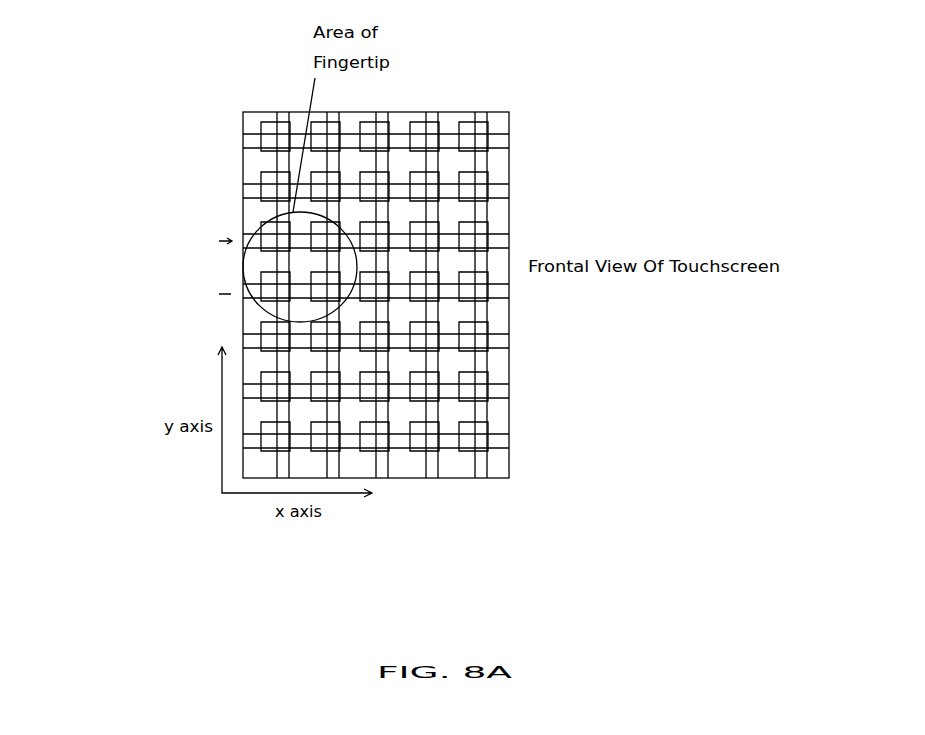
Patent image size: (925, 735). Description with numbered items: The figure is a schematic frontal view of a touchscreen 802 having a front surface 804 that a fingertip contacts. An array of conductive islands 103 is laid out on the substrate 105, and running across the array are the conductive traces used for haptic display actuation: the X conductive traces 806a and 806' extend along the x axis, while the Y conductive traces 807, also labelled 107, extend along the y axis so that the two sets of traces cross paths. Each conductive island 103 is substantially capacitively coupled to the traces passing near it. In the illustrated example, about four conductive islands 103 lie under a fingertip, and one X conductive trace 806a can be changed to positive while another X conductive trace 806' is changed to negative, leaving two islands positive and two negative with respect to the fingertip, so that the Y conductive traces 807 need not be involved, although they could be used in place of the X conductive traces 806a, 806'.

The conductive island 103 is at (537, 168).
The touchscreen substrate 105 is at (452, 130).
The Y conductive traces 107 is at (387, 467).
The touchscreen 802 is at (350, 250).
The front surface 804 is at (473, 334).
The X conductive trace 806' is at (223, 268).
The X conductive trace 806a is at (300, 347).
The Y conductive trace 807 is at (438, 338).